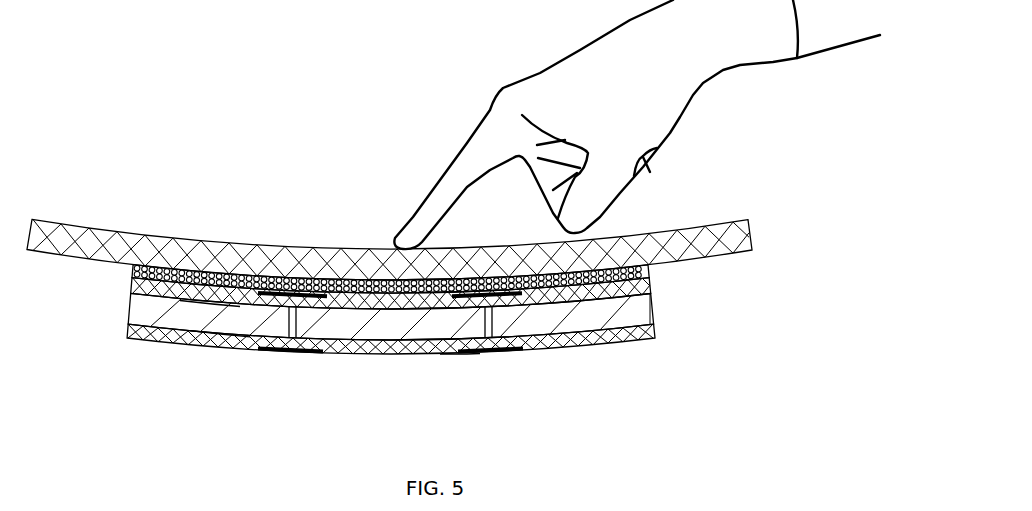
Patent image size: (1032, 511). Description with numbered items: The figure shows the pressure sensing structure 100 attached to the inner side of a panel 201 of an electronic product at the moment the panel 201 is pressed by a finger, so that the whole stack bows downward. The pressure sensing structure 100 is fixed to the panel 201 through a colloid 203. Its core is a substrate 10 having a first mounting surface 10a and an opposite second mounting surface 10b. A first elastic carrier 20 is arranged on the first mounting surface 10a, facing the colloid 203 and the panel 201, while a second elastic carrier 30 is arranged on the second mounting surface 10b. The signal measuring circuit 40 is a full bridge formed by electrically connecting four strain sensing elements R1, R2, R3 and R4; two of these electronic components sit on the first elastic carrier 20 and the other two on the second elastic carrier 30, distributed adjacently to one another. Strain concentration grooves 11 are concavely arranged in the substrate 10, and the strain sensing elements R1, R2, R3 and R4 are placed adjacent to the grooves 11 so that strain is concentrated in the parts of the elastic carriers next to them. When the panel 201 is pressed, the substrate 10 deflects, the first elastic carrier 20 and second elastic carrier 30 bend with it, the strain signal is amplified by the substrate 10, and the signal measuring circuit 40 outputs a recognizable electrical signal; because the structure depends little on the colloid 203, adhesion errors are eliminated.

The panel 201 is at (727, 236).
The colloid 203 is at (650, 272).
The first elastic carrier 20 is at (133, 286).
The substrate 10 is at (203, 317).
The second elastic carrier 30 is at (127, 337).
The first mounting surface 10a is at (212, 292).
The second mounting surface 10b is at (220, 345).
The strain sensing element R1 is at (290, 354).
The strain sensing element R2 is at (297, 291).
The strain sensing element R3 is at (491, 291).
The strain sensing element R4 is at (487, 356).
The strain concentration groove 11 is at (493, 318).
The signal measuring circuit 40 is at (458, 364).
The pressure sensing structure 100 is at (435, 312).